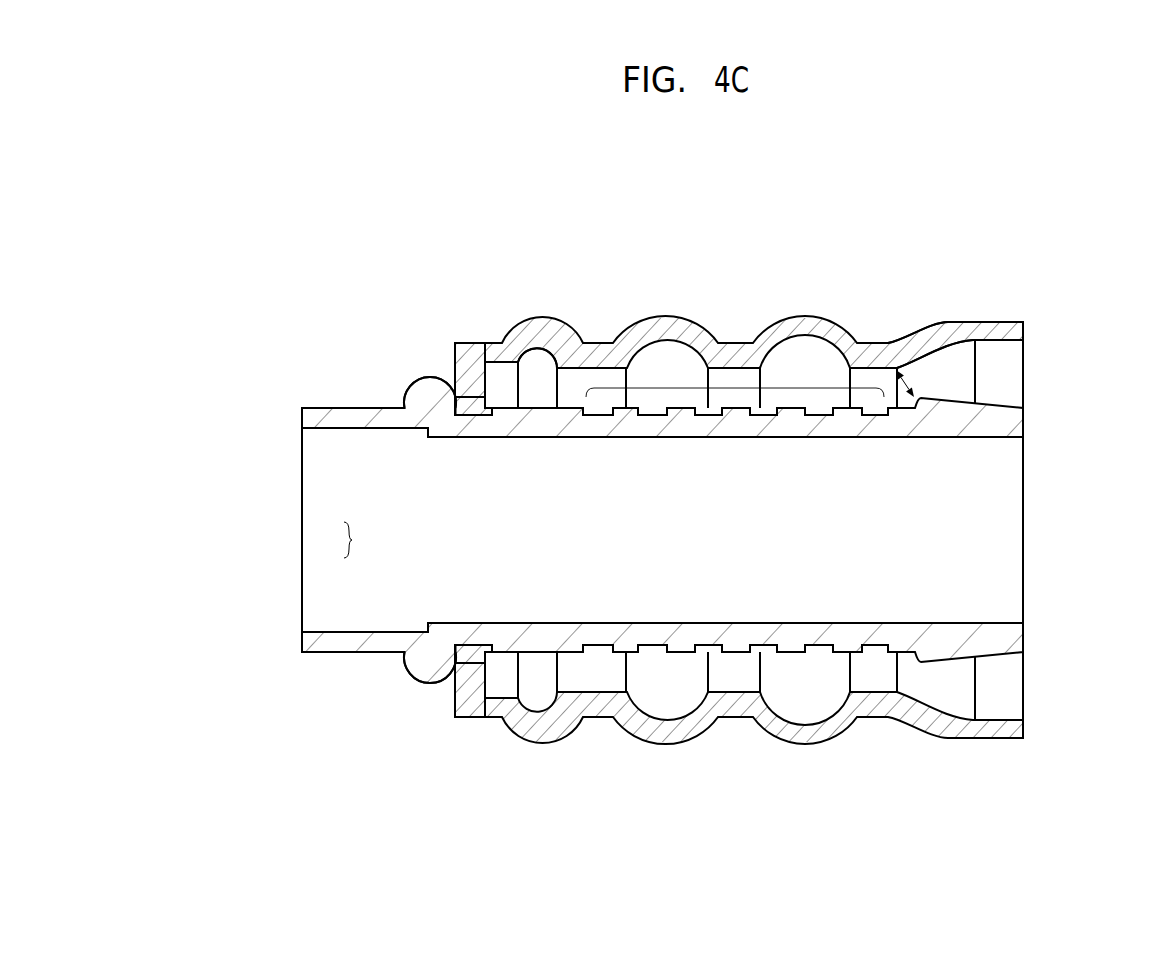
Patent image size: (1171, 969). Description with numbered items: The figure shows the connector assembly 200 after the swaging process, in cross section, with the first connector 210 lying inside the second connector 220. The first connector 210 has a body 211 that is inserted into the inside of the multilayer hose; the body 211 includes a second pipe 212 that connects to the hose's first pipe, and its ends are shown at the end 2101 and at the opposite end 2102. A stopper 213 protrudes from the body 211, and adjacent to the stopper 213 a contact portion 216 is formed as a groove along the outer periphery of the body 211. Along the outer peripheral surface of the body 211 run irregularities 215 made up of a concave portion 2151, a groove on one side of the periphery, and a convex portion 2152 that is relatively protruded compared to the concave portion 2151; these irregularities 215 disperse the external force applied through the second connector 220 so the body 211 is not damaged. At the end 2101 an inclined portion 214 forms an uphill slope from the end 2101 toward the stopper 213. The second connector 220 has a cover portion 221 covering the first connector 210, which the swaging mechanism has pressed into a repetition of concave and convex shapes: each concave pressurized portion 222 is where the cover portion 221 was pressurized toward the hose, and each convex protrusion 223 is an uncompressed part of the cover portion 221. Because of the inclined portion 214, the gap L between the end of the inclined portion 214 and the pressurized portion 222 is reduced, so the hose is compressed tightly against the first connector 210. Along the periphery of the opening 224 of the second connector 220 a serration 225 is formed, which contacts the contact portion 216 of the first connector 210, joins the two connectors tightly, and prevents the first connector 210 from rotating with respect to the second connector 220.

The connector assembly 200 is at (690, 237).
The first connector 210 is at (345, 668).
The body 211 is at (540, 415).
The second pipe 212 is at (343, 534).
The stopper 213 is at (425, 378).
The inclined portion 214 is at (993, 405).
The irregularities 215 is at (800, 388).
The contact portion 216 is at (483, 655).
The second connector 220 is at (1005, 752).
The cover portion 221 is at (975, 325).
The pressurized portion 222 is at (595, 356).
The protrusion 223 is at (803, 745).
The opening 224 is at (473, 397).
The serration 225 is at (483, 648).
The end of the body 2101 is at (1060, 598).
The first end 2102 is at (278, 453).
The concave portion 2151 is at (650, 652).
The convex portion 2152 is at (682, 652).
The gap L is at (903, 382).